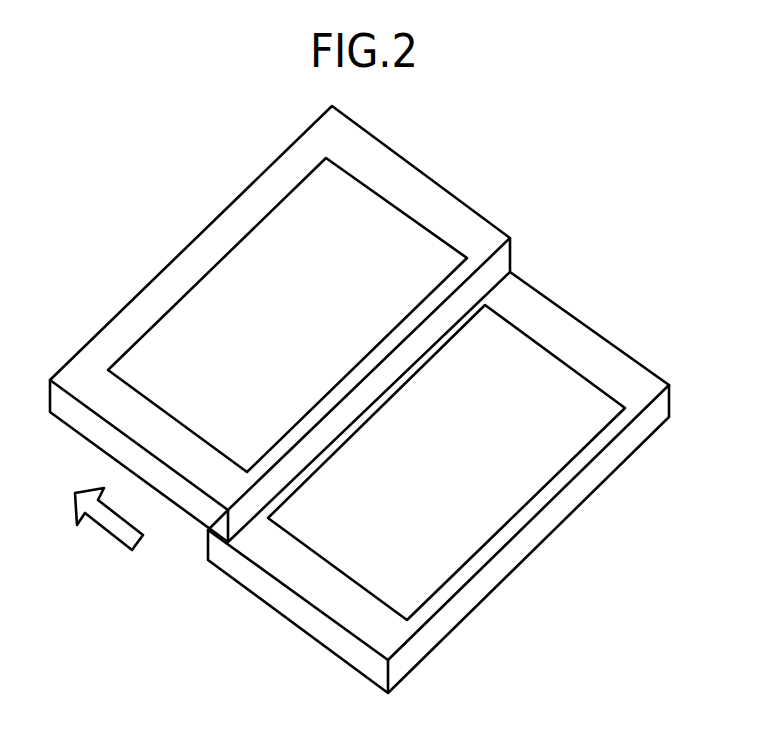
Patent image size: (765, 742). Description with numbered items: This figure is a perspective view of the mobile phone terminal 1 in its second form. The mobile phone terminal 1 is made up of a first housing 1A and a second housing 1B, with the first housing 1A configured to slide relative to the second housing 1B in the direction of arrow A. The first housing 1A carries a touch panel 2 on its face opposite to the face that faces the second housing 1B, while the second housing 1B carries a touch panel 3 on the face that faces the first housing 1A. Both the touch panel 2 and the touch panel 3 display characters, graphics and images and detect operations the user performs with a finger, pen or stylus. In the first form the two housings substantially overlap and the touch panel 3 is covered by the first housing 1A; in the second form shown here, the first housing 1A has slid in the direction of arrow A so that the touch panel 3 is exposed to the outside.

The mobile phone terminal 1 is at (563, 153).
The first housing 1A is at (418, 200).
The second housing 1B is at (573, 338).
The touch panel 2 is at (250, 277).
The touch panel 3 is at (505, 488).
The arrow A is at (105, 532).